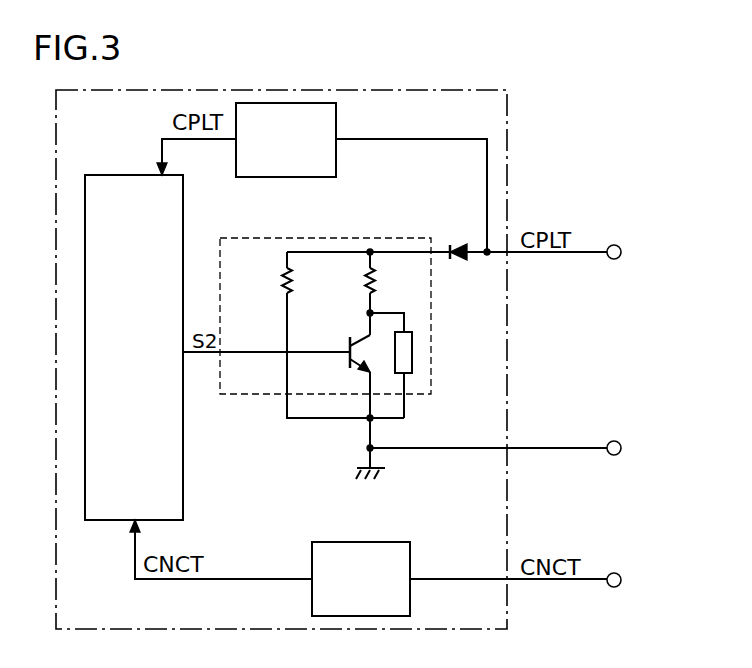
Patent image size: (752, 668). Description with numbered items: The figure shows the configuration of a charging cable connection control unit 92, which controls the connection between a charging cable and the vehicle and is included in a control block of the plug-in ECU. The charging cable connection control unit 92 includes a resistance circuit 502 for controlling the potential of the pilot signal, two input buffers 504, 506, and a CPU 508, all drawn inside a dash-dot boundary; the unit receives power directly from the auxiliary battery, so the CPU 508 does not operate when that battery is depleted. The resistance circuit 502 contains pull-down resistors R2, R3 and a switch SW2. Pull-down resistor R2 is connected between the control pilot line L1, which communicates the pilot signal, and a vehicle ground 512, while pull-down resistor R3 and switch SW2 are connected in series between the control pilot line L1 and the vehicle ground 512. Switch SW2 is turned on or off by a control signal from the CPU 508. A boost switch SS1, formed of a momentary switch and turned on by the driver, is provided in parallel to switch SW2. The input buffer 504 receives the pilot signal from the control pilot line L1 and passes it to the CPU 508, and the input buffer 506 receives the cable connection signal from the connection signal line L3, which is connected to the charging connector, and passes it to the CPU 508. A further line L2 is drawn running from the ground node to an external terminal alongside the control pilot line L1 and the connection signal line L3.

The charging cable connection control unit 92 is at (452, 90).
The resistance circuit 502 is at (367, 238).
The input buffer 504 is at (250, 177).
The input buffer 506 is at (350, 542).
The CPU 508 is at (183, 480).
The vehicle ground 512 is at (352, 472).
The pull-down resistor R2 is at (283, 277).
The pull-down resistor R3 is at (366, 277).
The switch SW2 is at (350, 345).
The boost switch SS1 is at (406, 332).
The control pilot line L1 is at (545, 255).
The ground line L2 is at (545, 446).
The connection signal line L3 is at (545, 583).